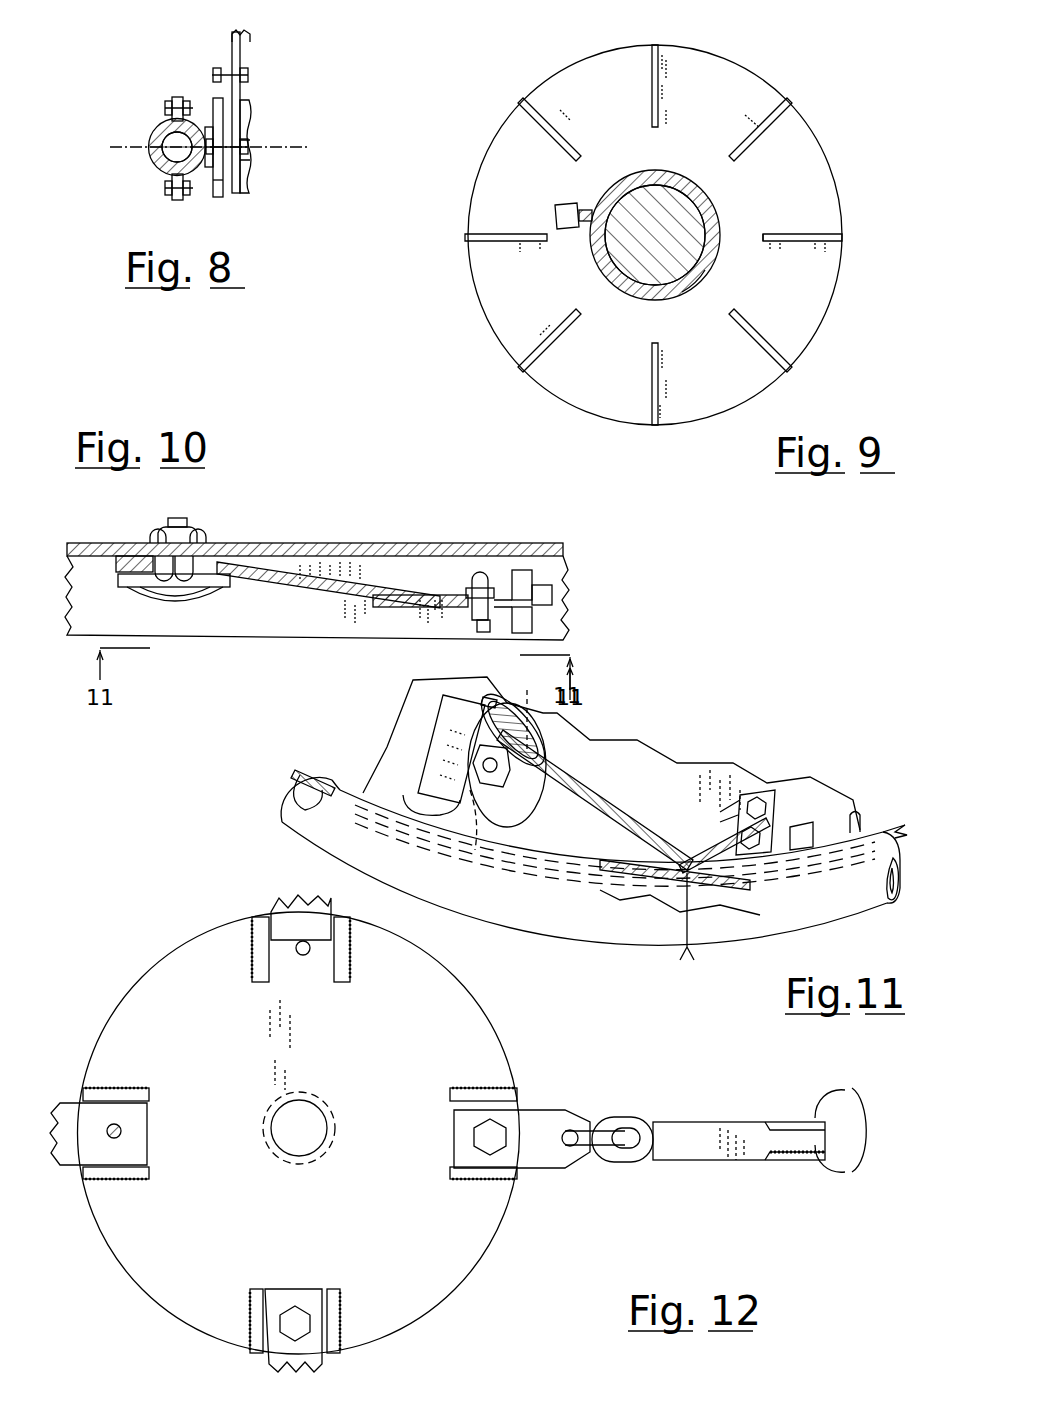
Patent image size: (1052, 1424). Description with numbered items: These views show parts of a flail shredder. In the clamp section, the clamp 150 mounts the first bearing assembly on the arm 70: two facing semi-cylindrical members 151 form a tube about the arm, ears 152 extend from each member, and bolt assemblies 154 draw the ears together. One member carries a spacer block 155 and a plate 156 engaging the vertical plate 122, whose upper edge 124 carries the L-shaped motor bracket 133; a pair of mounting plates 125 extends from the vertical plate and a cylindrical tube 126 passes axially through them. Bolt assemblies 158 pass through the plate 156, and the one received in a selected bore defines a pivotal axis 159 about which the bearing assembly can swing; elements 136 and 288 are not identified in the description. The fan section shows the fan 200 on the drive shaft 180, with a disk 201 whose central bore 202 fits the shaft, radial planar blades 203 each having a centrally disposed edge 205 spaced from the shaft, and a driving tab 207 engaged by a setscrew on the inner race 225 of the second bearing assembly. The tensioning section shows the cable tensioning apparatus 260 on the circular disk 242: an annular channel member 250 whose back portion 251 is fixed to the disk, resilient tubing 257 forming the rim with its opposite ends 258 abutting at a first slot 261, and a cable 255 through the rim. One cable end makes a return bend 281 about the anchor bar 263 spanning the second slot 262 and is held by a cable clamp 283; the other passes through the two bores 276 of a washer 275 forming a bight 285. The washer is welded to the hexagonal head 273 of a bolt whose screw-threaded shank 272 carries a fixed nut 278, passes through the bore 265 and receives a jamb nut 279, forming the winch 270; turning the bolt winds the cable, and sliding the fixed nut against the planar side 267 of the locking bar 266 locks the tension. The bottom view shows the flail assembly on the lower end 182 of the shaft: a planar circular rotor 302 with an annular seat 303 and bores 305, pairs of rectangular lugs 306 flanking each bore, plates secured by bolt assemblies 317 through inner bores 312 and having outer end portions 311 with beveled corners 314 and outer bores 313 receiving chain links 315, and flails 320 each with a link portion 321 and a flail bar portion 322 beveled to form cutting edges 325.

In FIG. 8, the arm 70 is at (161, 158).
In FIG. 8, the vertical plate 122 is at (225, 192).
In FIG. 8, the upper edge 124 is at (232, 62).
In FIG. 8, the mounting plates 125 is at (250, 110).
In FIG. 8, the cylindrical tube 126 is at (250, 165).
In FIG. 8, the L-shaped motor bracket 133 is at (246, 33).
In FIG. 8, the bolt 136 is at (248, 76).
In FIG. 8, the clamp 150 is at (98, 127).
In FIG. 8, the semi-cylindrical members 151 is at (160, 126).
In FIG. 8, the ears 152 is at (177, 97).
In FIG. 8, the bolt assemblies 154 is at (165, 106).
In FIG. 8, the spacer block 155 is at (206, 128).
In FIG. 8, the plate 156 is at (216, 186).
In FIG. 8, the bolt assemblies 158 is at (244, 144).
In FIG. 8, the pivotal axis 159 is at (110, 147).
In FIG. 9, the drive shaft 180 is at (652, 192).
In FIG. 9, the fan 200 is at (836, 99).
In FIG. 9, the disk 201 is at (574, 363).
In FIG. 9, the central bore 202 is at (687, 284).
In FIG. 9, the planar blades 203 is at (751, 131).
In FIG. 9, the centrally disposed edge 205 is at (728, 313).
In FIG. 9, the driving tab 207 is at (574, 232).
In FIG. 9, the inner race 225 is at (706, 207).
In FIG. 9, the block 288 is at (568, 204).
In FIG. 10, the circular disk 242 is at (391, 543).
In FIG. 11, the circular disk 242 is at (628, 793).
In FIG. 11, the annular channel member 250 is at (858, 815).
In FIG. 10, the back portion 251 is at (264, 625).
In FIG. 11, the cable 255 is at (296, 770).
In FIG. 11, the tubing 257 is at (405, 881).
In FIG. 11, the opposite ends 258 is at (688, 932).
In FIG. 10, the cable tensioning apparatus 260 is at (347, 514).
In FIG. 10, the first slot 261 is at (388, 607).
In FIG. 10, the second slot 262 is at (548, 580).
In FIG. 10, the anchor bar 263 is at (520, 570).
In FIG. 11, the anchor bar 263 is at (765, 797).
In FIG. 10, the bore 265 is at (200, 532).
In FIG. 10, the locking bar 266 is at (143, 563).
In FIG. 11, the locking bar 266 is at (440, 790).
In FIG. 11, the planar side 267 is at (420, 793).
In FIG. 10, the winch 270 is at (98, 598).
In FIG. 11, the winch 270 is at (562, 739).
In FIG. 10, the screw-threaded shank 272 is at (176, 518).
In FIG. 11, the screw-threaded shank 272 is at (505, 735).
In FIG. 10, the hexagonal head 273 is at (162, 600).
In FIG. 11, the hexagonal head 273 is at (510, 800).
In FIG. 10, the washer 275 is at (117, 583).
In FIG. 11, the washer 275 is at (535, 800).
In FIG. 10, the bores 276 is at (183, 610).
In FIG. 11, the bores 276 is at (527, 707).
In FIG. 10, the fixed nut 278 is at (190, 567).
In FIG. 11, the fixed nut 278 is at (487, 800).
In FIG. 10, the jamb nut 279 is at (157, 537).
In FIG. 10, the return bend 281 is at (556, 607).
In FIG. 11, the return bend 281 is at (810, 825).
In FIG. 10, the cable clamp 283 is at (474, 632).
In FIG. 11, the cable clamp 283 is at (740, 798).
In FIG. 10, the bight 285 is at (137, 593).
In FIG. 11, the bight 285 is at (503, 737).
In FIG. 12, the lower end 182 is at (282, 1130).
In FIG. 12, the planar circular rotor 302 is at (335, 1216).
In FIG. 12, the annular seat 303 is at (278, 1150).
In FIG. 12, the bores 305 is at (303, 956).
In FIG. 12, the rectangular lugs 306 is at (253, 952).
In FIG. 12, the outer end portion 311 is at (282, 906).
In FIG. 12, the inner bore 312 is at (121, 1131).
In FIG. 12, the outer bore 313 is at (570, 1160).
In FIG. 12, the corners 314 is at (575, 1130).
In FIG. 12, the chain link 315 is at (602, 1130).
In FIG. 12, the bolt assembly 317 is at (474, 1137).
In FIG. 12, the flails 320 is at (723, 1184).
In FIG. 12, the link portion 321 is at (645, 1120).
In FIG. 12, the flail bar portion 322 is at (700, 1160).
In FIG. 12, the cutting edges 325 is at (818, 1110).